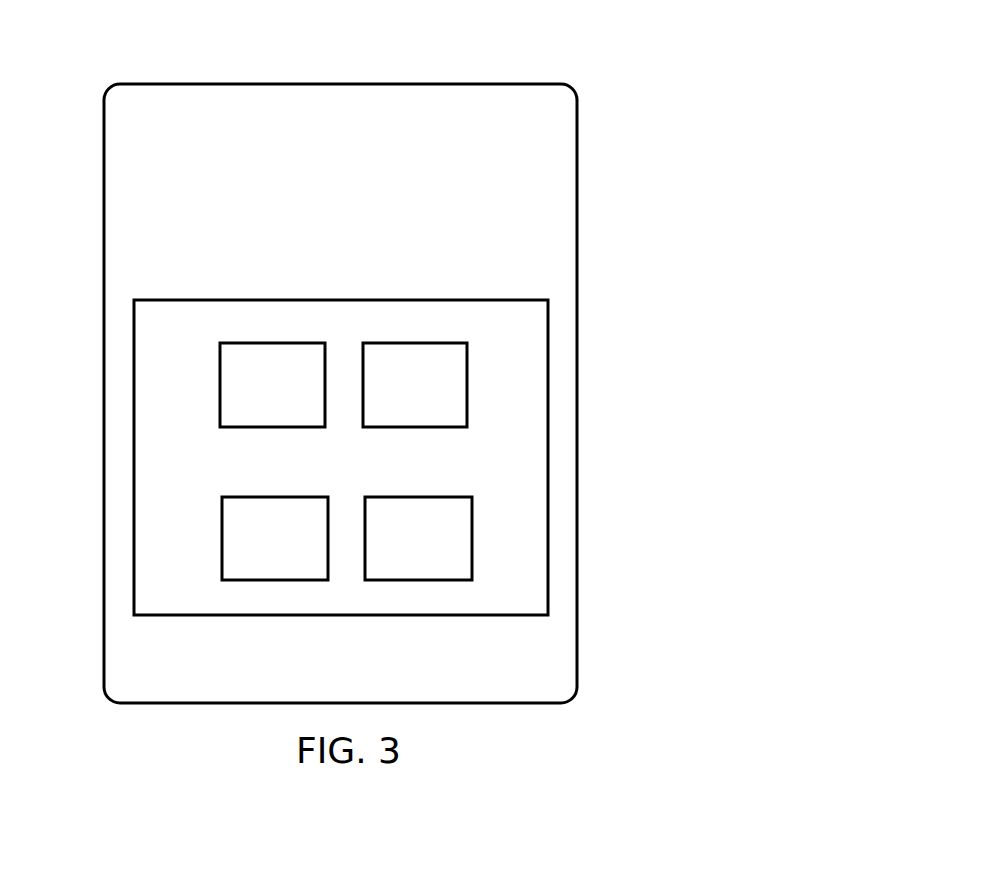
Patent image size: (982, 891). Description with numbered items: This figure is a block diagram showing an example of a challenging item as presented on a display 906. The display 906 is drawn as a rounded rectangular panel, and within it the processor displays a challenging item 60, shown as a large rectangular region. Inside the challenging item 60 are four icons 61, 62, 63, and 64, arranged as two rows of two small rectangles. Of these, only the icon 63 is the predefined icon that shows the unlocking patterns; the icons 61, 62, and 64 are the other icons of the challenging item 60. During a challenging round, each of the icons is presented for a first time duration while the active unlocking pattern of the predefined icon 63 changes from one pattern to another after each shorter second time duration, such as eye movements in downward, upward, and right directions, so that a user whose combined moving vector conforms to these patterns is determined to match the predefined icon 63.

The display 906 is at (340, 85).
The challenging item 60 is at (345, 301).
The icon 61 is at (220, 392).
The icon 62 is at (222, 545).
The icon 63 is at (467, 382).
The icon 64 is at (472, 537).